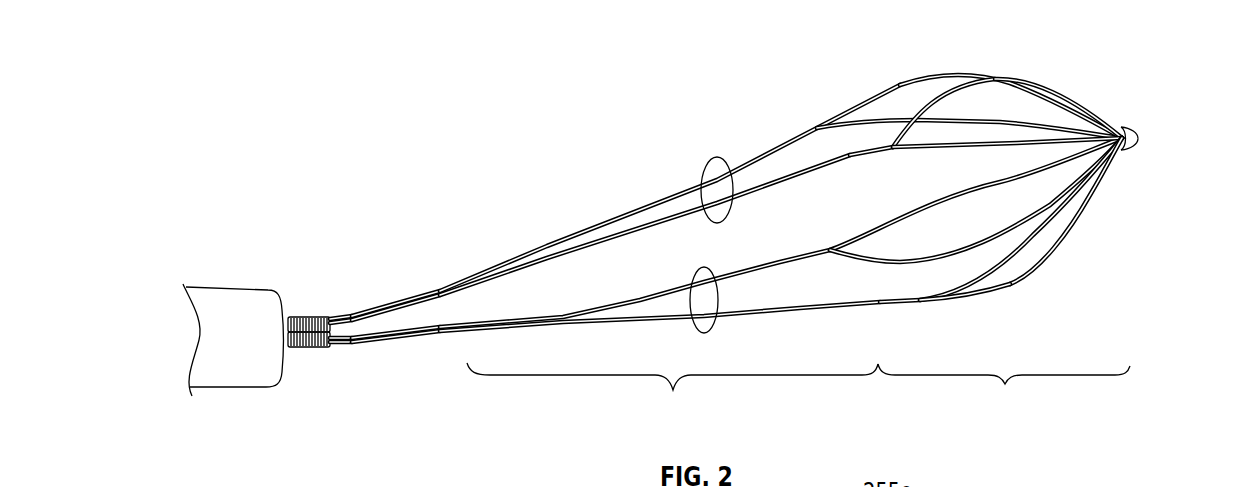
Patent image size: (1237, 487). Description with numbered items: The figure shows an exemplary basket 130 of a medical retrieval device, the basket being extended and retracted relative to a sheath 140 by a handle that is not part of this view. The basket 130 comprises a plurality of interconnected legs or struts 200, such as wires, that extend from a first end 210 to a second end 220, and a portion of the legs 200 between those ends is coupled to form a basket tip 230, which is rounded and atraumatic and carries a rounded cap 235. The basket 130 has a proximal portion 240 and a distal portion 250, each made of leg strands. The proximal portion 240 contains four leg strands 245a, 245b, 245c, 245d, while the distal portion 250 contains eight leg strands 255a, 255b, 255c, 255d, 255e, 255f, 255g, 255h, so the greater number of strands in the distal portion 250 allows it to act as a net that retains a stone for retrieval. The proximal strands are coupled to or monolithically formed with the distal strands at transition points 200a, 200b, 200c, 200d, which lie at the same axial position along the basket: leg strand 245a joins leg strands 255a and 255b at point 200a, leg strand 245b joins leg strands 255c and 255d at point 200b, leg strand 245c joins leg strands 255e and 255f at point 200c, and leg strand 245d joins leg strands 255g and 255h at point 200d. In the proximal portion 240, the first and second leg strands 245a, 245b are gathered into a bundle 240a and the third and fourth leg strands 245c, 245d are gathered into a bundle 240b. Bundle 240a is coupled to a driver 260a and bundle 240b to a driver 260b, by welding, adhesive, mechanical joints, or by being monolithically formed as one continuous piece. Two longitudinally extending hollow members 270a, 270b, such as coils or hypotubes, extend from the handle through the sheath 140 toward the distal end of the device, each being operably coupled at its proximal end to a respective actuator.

The basket 130 is at (551, 168).
The sheath 140 is at (229, 292).
The legs 200 is at (789, 125).
The transition point 200a is at (817, 128).
The transition point 200b is at (893, 140).
The transition point 200c is at (836, 249).
The transition point 200d is at (873, 309).
The first end 210 is at (425, 295).
The second end 220 is at (428, 332).
The basket tip 230 is at (1137, 137).
The atraumatic cap 235 is at (1137, 142).
The proximal portion 240 is at (672, 393).
The first bundle 240a is at (702, 172).
The second bundle 240b is at (689, 330).
The first leg strand 245a is at (537, 254).
The second leg strand 245b is at (545, 264).
The third leg strand 245c is at (742, 274).
The fourth leg strand 245d is at (739, 319).
The distal portion 250 is at (1004, 391).
The leg strand 255a is at (939, 74).
The leg strand 255b is at (1042, 78).
The leg strand 255c is at (1053, 89).
The leg strand 255d is at (1097, 127).
The leg strand 255e is at (1091, 176).
The leg strand 255f is at (1059, 229).
The leg strand 255g is at (1030, 256).
The leg strand 255h is at (1003, 286).
The driver 260a is at (351, 316).
The driver 260b is at (353, 345).
The hollow member 270a is at (307, 315).
The hollow member 270b is at (312, 349).